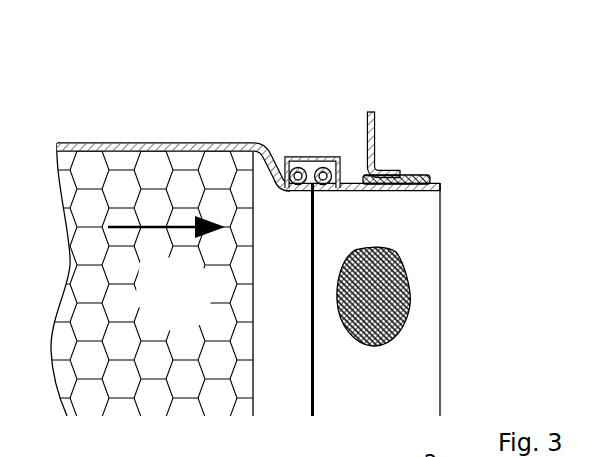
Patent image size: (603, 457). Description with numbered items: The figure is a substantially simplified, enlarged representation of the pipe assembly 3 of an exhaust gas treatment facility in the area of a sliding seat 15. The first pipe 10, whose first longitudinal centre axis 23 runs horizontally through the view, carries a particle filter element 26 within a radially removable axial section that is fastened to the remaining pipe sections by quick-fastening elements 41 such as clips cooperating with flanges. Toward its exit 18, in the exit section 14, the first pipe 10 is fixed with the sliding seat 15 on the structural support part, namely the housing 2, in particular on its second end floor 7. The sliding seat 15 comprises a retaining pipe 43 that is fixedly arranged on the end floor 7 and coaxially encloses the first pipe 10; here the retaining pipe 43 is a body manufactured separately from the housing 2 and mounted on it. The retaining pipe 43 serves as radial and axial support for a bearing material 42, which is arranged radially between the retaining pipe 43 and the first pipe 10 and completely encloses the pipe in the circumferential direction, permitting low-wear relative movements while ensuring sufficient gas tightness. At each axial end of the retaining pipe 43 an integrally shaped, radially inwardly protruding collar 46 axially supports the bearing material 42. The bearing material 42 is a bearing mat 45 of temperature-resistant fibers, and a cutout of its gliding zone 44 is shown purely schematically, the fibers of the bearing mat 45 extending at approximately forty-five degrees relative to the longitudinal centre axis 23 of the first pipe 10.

The housing 2 is at (393, 110).
The pipe assembly 3 is at (169, 247).
The second end floor 7 is at (366, 142).
The first pipe 10 is at (165, 150).
The exit section 14 is at (420, 190).
The sliding seat 15 is at (460, 182).
The exit 18 is at (440, 292).
The first longitudinal centre axis 23 is at (282, 413).
The particle filter element 26 is at (184, 304).
The fastening elements 41 is at (309, 152).
The bearing material 42 is at (410, 174).
The retaining pipe 43 is at (427, 165).
The gliding zone 44 is at (413, 268).
The bearing mat 45 is at (400, 308).
The collar 46 is at (356, 178).